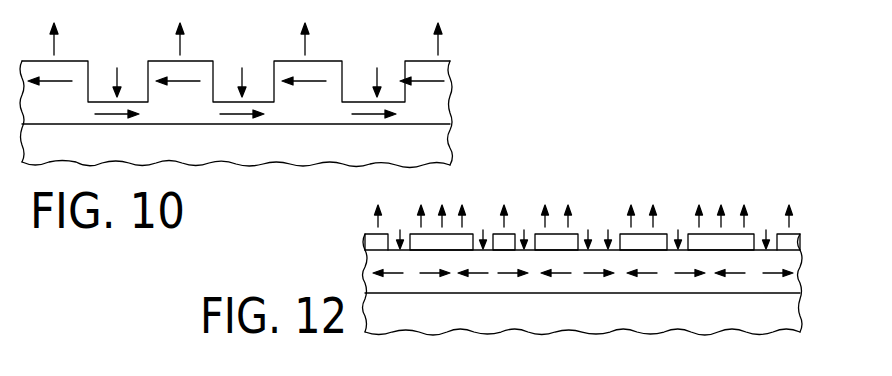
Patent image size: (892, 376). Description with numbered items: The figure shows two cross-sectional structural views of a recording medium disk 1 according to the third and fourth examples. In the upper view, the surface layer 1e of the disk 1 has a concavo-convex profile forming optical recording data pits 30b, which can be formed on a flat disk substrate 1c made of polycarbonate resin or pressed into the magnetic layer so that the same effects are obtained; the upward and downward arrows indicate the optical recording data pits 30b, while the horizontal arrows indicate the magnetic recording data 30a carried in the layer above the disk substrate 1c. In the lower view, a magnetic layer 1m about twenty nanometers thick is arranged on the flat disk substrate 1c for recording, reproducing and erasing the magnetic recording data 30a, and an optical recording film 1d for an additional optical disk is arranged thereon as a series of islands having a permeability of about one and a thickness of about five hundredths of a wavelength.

In FIG. 10, the disk 1 is at (398, 152).
In FIG. 12, the disk 1 is at (683, 316).
In FIG. 10, the disk substrate 1c is at (236, 139).
In FIG. 12, the disk substrate 1c is at (587, 315).
In FIG. 10, the corrugated surface layer 1e is at (442, 100).
In FIG. 12, the optical recording film 1d is at (795, 240).
In FIG. 12, the magnetic layer 1m is at (790, 278).
In FIG. 10, the magnetic recording data 30a is at (372, 112).
In FIG. 12, the magnetic recording data 30a is at (425, 276).
In FIG. 10, the optical recording data pits 30b is at (307, 50).
In FIG. 12, the optical recording data pits 30b is at (505, 222).